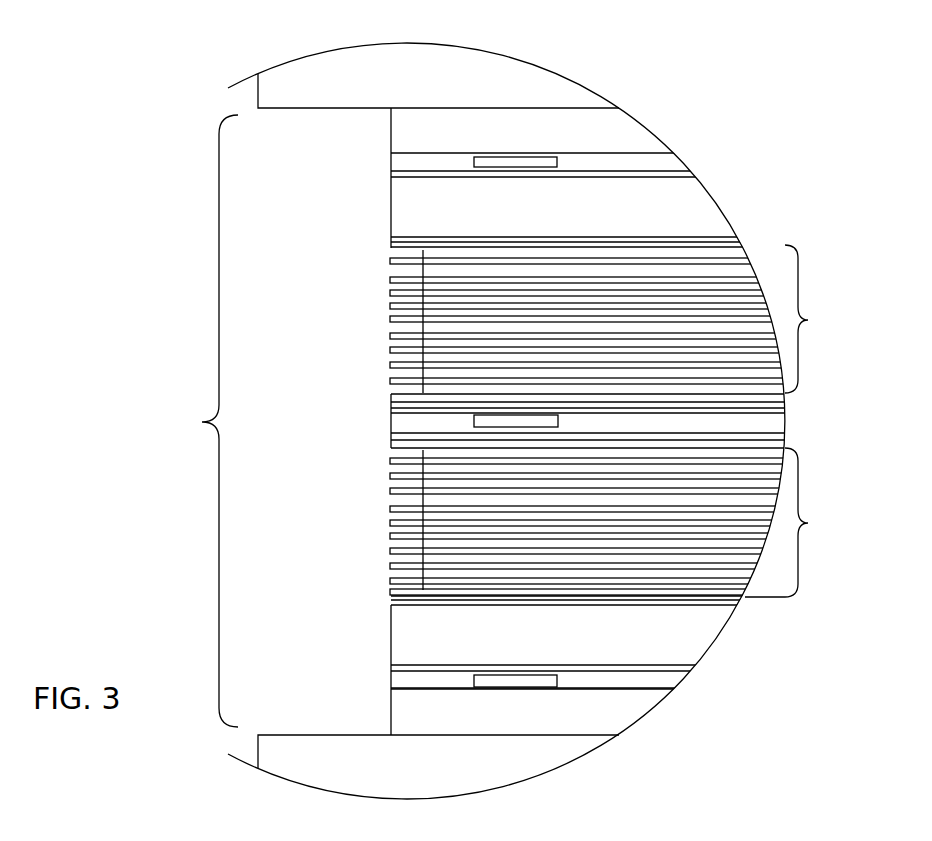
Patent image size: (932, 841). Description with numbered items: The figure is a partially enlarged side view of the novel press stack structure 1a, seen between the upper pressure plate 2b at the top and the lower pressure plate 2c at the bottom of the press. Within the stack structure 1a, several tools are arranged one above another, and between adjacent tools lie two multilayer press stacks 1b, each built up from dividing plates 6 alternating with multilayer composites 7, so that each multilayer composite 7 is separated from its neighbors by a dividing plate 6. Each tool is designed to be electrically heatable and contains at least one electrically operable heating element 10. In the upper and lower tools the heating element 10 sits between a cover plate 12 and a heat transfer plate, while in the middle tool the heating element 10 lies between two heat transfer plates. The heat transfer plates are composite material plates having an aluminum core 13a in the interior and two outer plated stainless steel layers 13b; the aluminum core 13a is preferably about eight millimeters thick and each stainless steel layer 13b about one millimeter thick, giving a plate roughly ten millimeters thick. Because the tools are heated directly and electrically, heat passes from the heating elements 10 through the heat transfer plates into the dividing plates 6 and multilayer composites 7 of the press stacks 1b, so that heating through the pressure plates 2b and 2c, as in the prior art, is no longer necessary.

The stack structure 1a is at (205, 421).
The multilayer press stack 1b is at (791, 421).
The upper pressure plate 2b is at (305, 85).
The lower pressure plate 2c is at (305, 752).
The dividing plate 6 is at (391, 319).
The multilayer composite 7 is at (435, 358).
The heating element 10 is at (640, 160).
The cover plate 12 is at (505, 141).
The aluminum core 13a is at (499, 647).
The stainless steel layer 13b is at (657, 172).